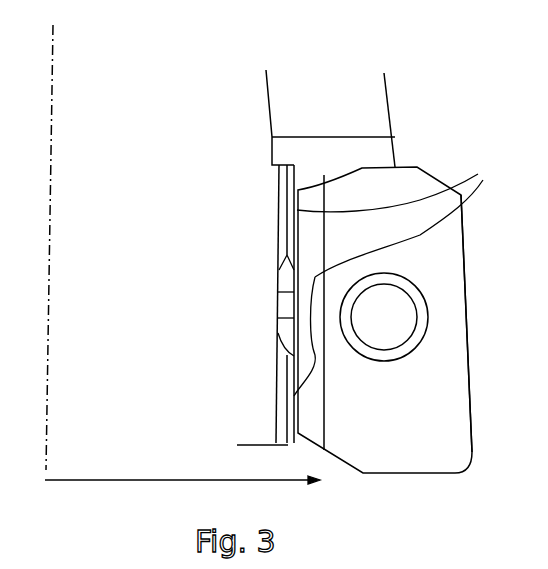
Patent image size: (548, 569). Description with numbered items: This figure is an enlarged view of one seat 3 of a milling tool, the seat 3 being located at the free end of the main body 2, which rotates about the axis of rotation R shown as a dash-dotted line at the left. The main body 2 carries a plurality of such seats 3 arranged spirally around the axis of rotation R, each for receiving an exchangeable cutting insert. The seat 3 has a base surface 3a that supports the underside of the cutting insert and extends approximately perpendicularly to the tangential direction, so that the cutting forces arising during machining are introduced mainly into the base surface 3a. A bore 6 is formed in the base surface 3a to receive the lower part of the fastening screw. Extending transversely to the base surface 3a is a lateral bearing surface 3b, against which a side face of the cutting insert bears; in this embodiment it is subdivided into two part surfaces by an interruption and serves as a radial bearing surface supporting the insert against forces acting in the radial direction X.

The main body 2 is at (327, 97).
The seat 3 is at (404, 273).
The base surface 3a is at (443, 254).
The lateral bearing surface 3b is at (401, 213).
The bore 6 is at (383, 335).
The axis of rotation R is at (55, 98).
The radial direction X is at (273, 485).